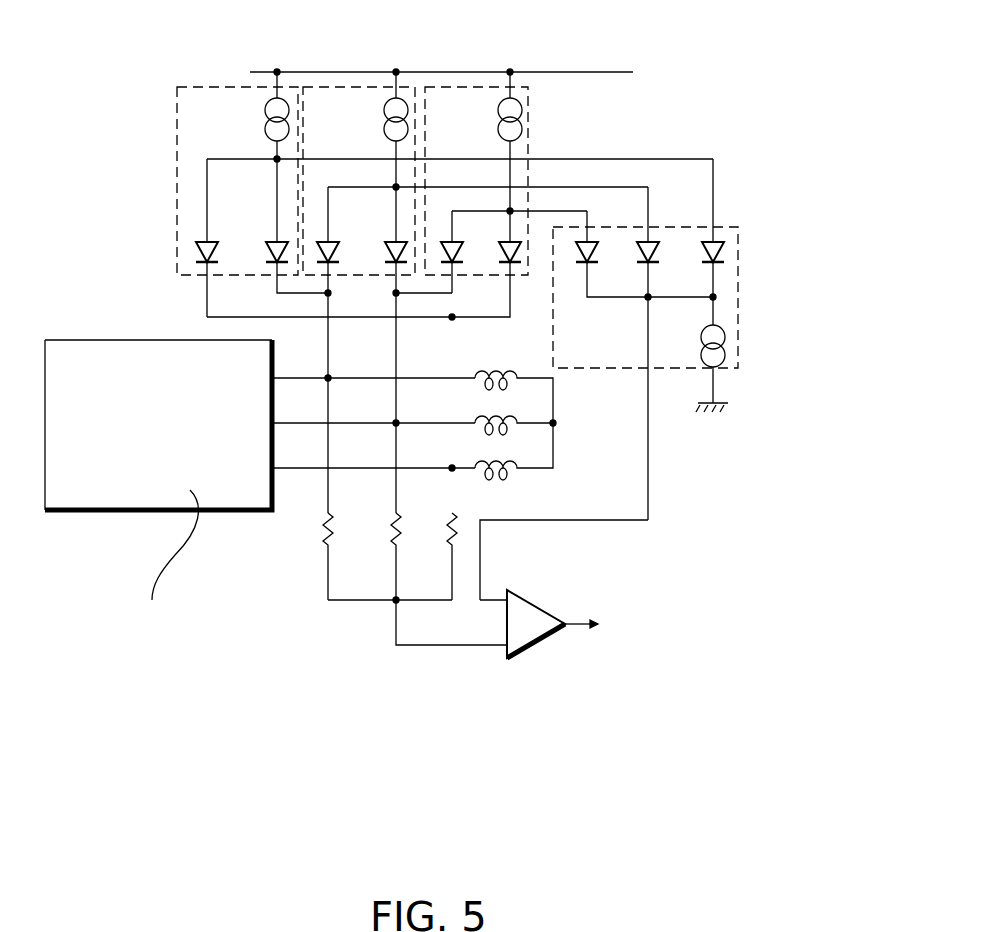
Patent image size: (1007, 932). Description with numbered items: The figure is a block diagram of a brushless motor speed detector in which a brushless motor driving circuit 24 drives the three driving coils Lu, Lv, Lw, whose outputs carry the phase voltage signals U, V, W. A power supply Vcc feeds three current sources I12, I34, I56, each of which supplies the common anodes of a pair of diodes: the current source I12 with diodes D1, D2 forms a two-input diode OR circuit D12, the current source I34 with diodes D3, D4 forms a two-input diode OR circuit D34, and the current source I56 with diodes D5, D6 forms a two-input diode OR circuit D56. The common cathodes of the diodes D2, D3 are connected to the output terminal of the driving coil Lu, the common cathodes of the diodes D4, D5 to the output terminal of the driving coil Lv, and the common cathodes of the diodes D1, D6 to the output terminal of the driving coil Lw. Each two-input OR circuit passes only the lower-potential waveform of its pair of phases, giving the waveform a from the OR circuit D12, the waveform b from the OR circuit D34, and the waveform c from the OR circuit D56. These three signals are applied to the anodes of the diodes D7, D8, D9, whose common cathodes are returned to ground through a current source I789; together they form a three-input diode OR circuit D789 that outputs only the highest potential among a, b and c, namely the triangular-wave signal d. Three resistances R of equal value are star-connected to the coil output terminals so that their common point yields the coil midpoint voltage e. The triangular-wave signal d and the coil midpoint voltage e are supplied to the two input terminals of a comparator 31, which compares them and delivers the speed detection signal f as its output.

The brushless motor driving circuit 24 is at (130, 514).
The comparator 31 is at (532, 600).
The diode D1 is at (226, 242).
The diode D2 is at (262, 235).
The diode D3 is at (352, 240).
The diode D4 is at (390, 250).
The diode D5 is at (472, 242).
The diode D6 is at (504, 270).
The diode D7 is at (592, 246).
The diode D8 is at (640, 258).
The diode D9 is at (704, 258).
The two-input diode OR circuit D12 is at (176, 166).
The two-input diode OR circuit D34 is at (410, 86).
The two-input diode OR circuit D56 is at (532, 150).
The three-input diode OR circuit D789 is at (740, 298).
The current source I12 is at (265, 118).
The current source I34 is at (384, 118).
The current source I56 is at (498, 122).
The current source I789 is at (740, 350).
The driving coil Lu is at (486, 377).
The driving coil Lv is at (502, 422).
The driving coil Lw is at (503, 480).
The resistance R is at (318, 547).
The power supply Vcc is at (411, 70).
The U-phase voltage signal U is at (373, 362).
The V-phase voltage signal V is at (373, 407).
The W-phase voltage signal W is at (373, 452).
The output waveform of two-input diode OR circuit D12 a is at (274, 160).
The output waveform of two-input diode OR circuit D34 b is at (395, 189).
The output waveform of two-input diode OR circuit D56 c is at (508, 208).
The triangular-wave signal d is at (646, 334).
The coil midpoint voltage e is at (410, 647).
The speed detection signal f is at (578, 622).